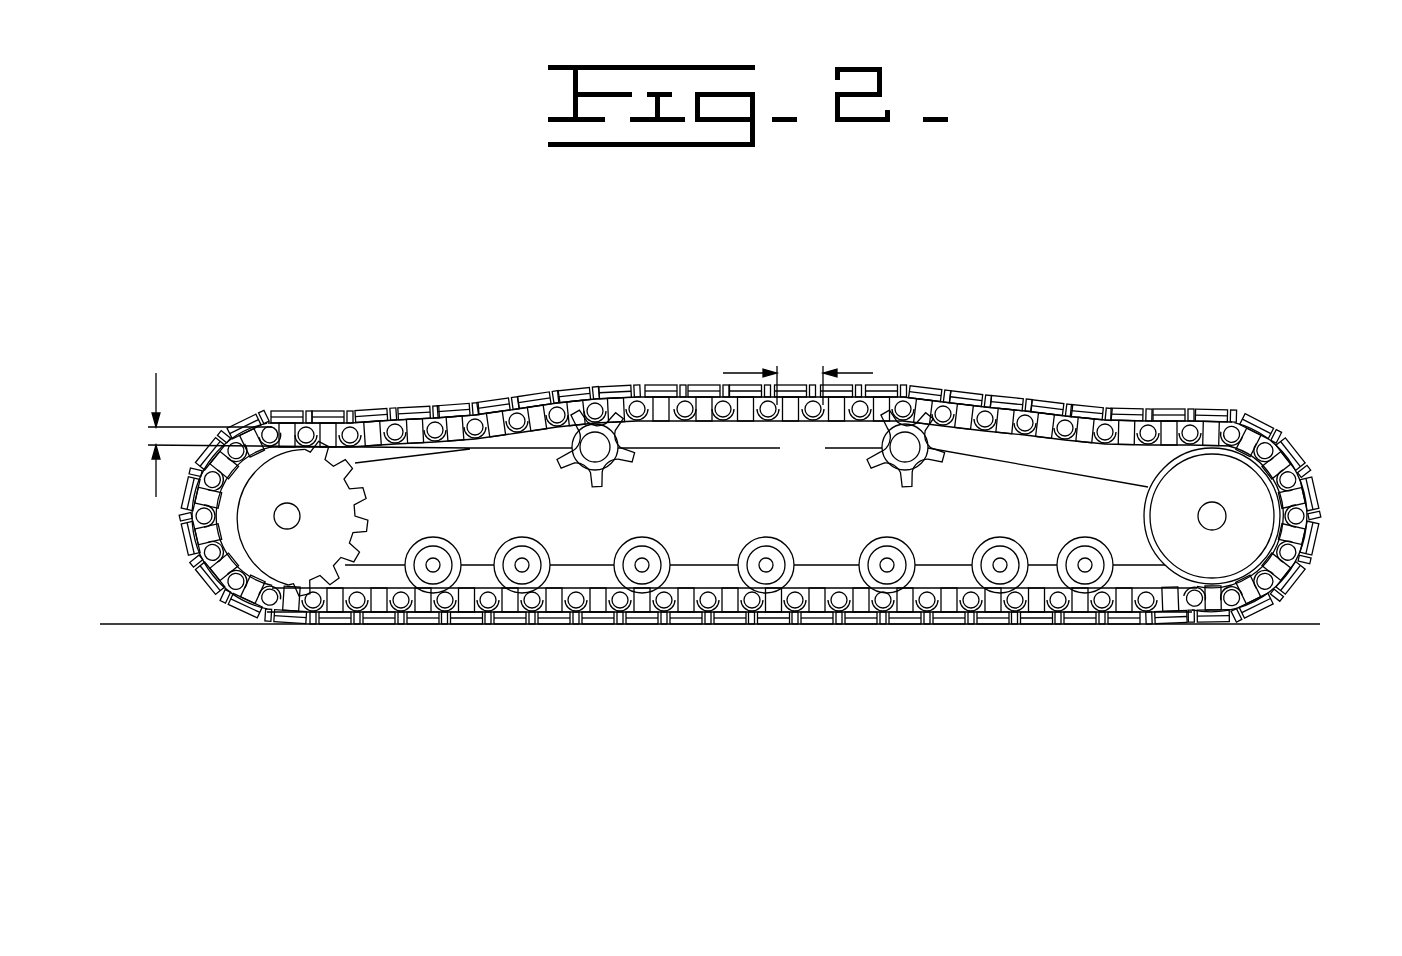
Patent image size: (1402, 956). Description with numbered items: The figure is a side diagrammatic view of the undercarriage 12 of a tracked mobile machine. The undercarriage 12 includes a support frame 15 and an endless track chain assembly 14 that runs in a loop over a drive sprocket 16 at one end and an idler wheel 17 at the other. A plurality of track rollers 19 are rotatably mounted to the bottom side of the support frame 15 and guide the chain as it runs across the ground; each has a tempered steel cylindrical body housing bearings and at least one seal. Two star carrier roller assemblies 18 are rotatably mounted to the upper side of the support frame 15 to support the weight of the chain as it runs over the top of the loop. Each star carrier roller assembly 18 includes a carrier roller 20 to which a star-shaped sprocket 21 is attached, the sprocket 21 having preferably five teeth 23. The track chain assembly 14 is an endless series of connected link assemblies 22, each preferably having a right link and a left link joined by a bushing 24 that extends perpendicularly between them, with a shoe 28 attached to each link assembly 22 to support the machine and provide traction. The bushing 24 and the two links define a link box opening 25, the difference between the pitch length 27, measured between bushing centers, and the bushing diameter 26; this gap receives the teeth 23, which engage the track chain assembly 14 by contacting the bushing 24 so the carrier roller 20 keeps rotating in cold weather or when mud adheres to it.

The undercarriage 12 is at (940, 348).
The track chain assembly 14 is at (778, 622).
The support frame 15 is at (497, 451).
The drive sprocket 16 is at (330, 566).
The idler wheel 17 is at (1168, 580).
The star carrier roller assembly 18 is at (622, 472).
The track roller 19 is at (620, 542).
The carrier roller 20 is at (575, 477).
The sprocket 21 is at (622, 438).
The link assembly 22 is at (825, 428).
The teeth 23 is at (943, 482).
The bushing 24 is at (686, 420).
The link box opening 25 is at (1043, 420).
The bushing diameter 26 is at (152, 392).
The pitch length 27 is at (745, 372).
The shoe 28 is at (947, 621).